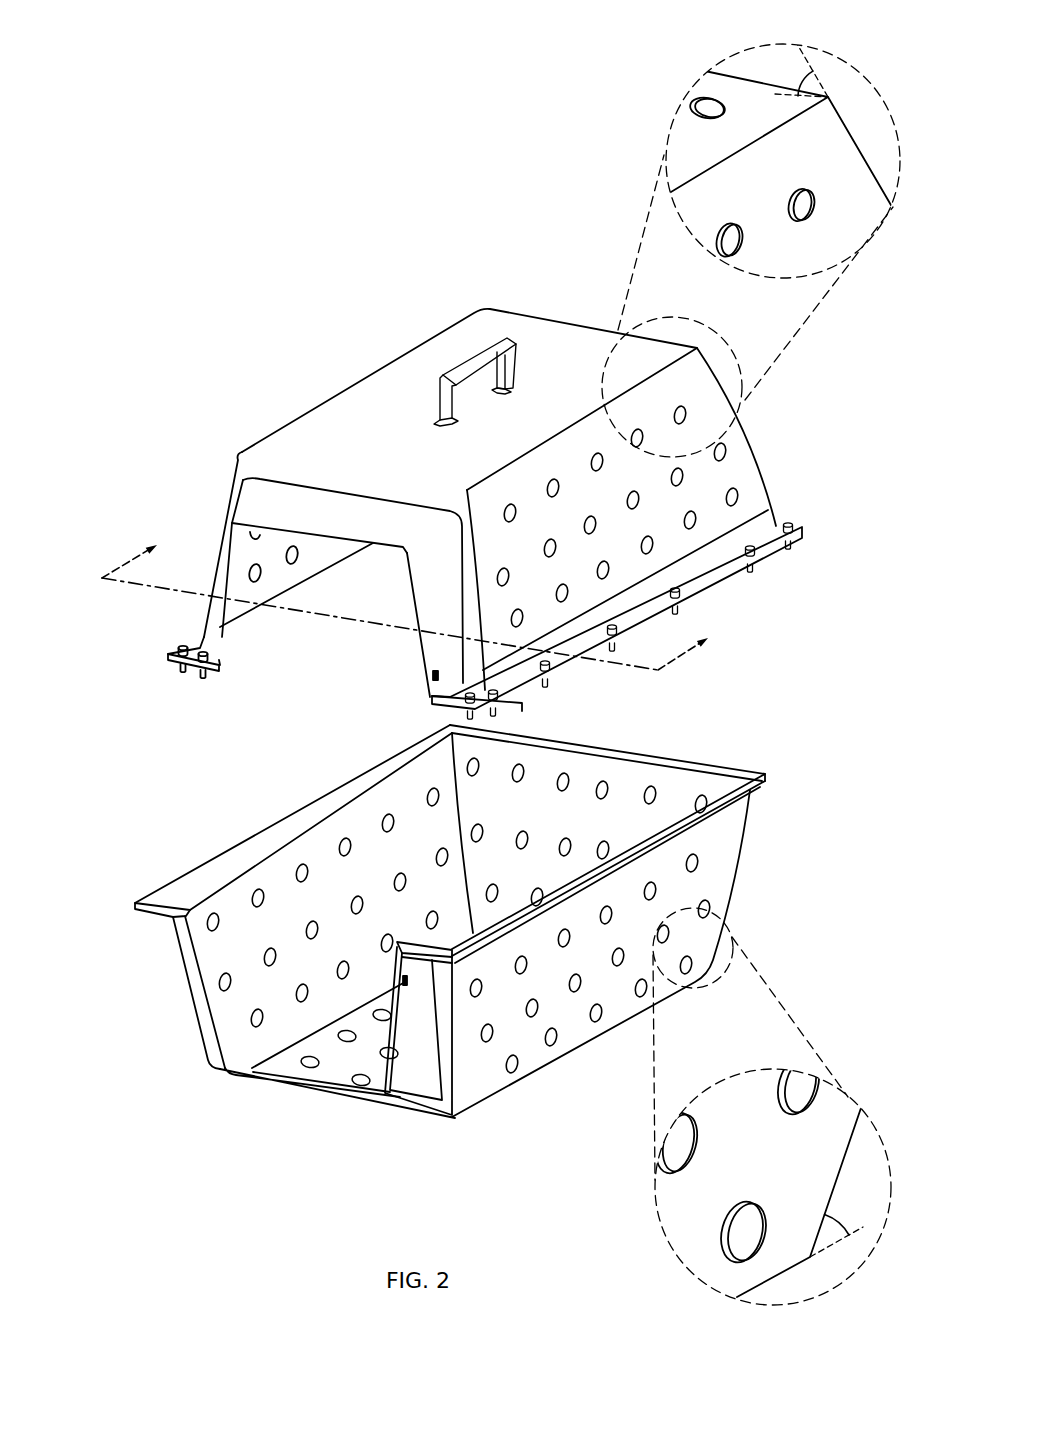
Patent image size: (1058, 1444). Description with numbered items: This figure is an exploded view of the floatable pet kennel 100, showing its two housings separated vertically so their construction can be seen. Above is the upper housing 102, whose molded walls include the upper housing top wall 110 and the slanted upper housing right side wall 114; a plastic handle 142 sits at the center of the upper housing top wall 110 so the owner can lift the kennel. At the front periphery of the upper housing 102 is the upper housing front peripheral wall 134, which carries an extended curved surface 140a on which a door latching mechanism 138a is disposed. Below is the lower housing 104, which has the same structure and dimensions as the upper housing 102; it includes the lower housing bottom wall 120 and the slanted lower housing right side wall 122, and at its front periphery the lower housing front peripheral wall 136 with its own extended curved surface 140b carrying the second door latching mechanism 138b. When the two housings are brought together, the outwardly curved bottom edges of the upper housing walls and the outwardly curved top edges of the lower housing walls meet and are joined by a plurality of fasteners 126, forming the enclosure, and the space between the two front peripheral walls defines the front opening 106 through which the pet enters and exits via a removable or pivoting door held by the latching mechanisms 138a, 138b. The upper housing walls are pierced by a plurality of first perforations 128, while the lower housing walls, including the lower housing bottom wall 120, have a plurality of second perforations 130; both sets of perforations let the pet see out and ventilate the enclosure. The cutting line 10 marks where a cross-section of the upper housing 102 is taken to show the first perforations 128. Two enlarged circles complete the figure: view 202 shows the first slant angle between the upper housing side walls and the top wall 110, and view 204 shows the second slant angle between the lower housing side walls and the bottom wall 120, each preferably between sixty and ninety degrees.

The floatable pet kennel 100 is at (179, 245).
The upper housing 102 is at (489, 482).
The lower housing 104 is at (476, 956).
The front opening 106 is at (346, 1056).
The cutting view 10- 10 is at (417, 601).
The upper housing top wall 110 is at (527, 330).
The upper housing right side wall 114 is at (750, 470).
The lower housing bottom wall 120 is at (530, 1085).
The lower housing right side wall 122 is at (578, 1032).
The fasteners 126 is at (778, 553).
The first perforations 128 is at (740, 498).
The second perforations 130 is at (702, 862).
The upper housing front peripheral wall 134 is at (278, 470).
The lower housing front peripheral wall 136 is at (455, 1085).
The door latching mechanism 138a is at (432, 675).
The door latching mechanism 138b is at (401, 980).
The extended curved surface 140a is at (263, 500).
The extended curved surface 140b is at (420, 1080).
The handle 142 is at (457, 372).
The view 202 is at (732, 231).
The view 204 is at (777, 1106).